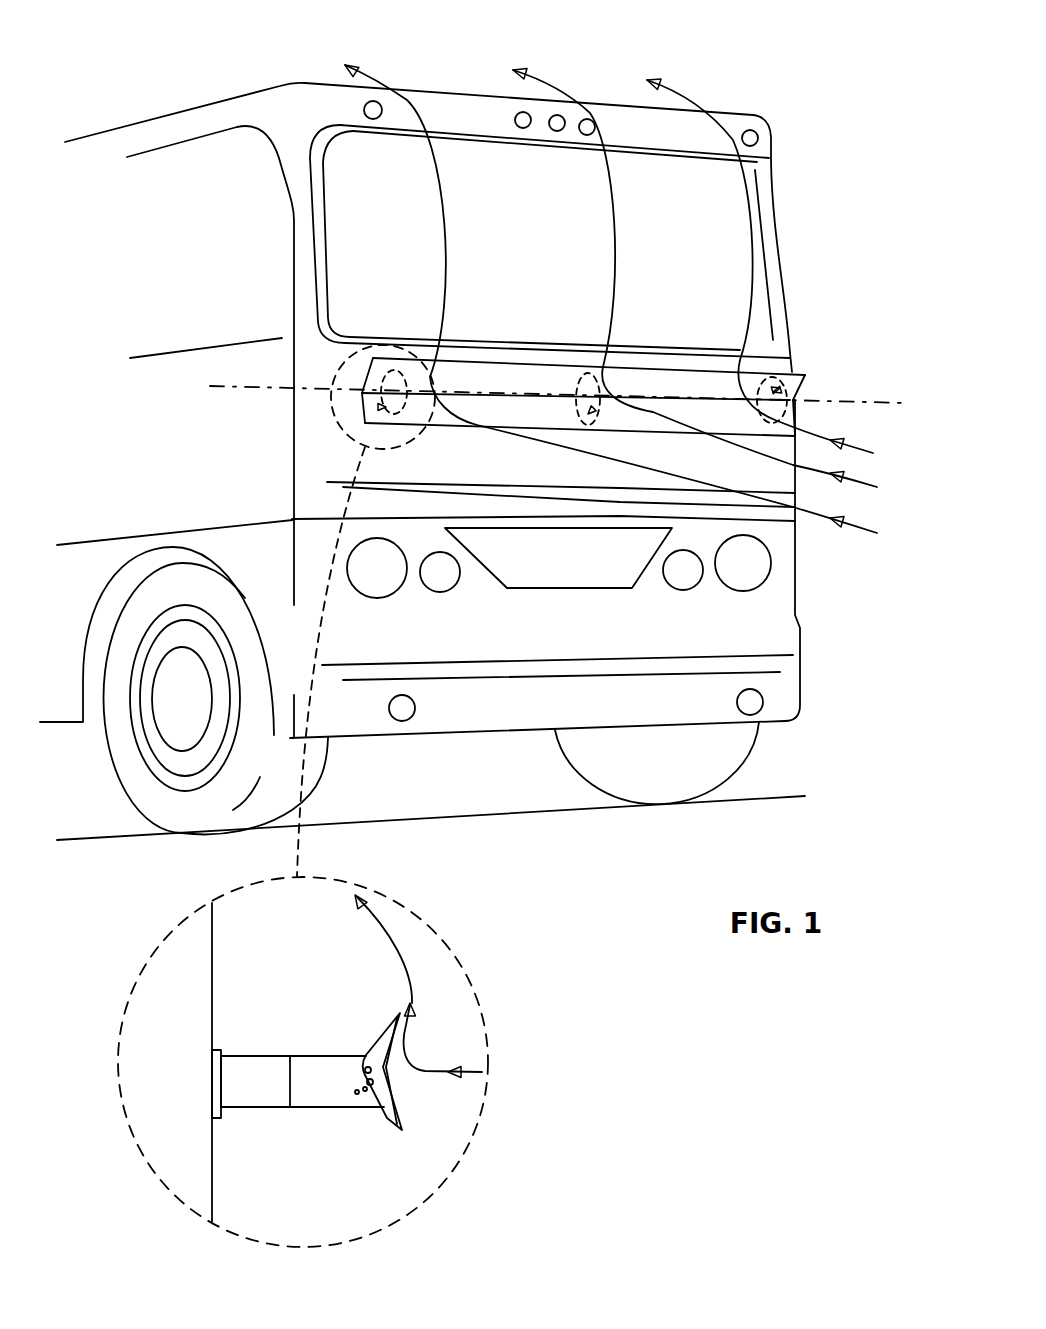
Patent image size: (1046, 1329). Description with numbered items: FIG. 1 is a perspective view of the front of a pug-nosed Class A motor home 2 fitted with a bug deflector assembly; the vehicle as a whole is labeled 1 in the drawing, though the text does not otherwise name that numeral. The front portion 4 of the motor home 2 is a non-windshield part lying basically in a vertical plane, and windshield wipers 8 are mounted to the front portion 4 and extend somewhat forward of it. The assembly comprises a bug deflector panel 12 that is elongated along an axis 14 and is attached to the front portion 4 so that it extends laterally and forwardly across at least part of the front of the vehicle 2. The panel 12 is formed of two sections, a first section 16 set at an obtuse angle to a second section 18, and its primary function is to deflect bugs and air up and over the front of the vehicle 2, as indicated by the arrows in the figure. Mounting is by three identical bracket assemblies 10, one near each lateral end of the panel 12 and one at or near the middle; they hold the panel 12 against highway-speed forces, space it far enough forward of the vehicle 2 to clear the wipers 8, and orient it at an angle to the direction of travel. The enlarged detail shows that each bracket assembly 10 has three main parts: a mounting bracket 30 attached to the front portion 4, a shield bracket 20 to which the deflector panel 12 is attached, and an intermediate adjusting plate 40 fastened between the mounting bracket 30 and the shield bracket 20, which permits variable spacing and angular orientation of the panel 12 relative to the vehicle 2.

The vehicle 1 is at (725, 249).
The Class A motor home 2 is at (722, 87).
The front portion 4 is at (213, 960).
The windshield wipers 8 is at (690, 403).
The bracket assembly 10 is at (365, 412).
The bug deflector panel 12 is at (483, 436).
The axis 14 is at (886, 405).
The first section 16 is at (497, 389).
The second section 18 is at (555, 425).
The shield bracket 20 is at (383, 1092).
The mounting bracket 30 is at (247, 1067).
The adjusting plate 40 is at (318, 1066).